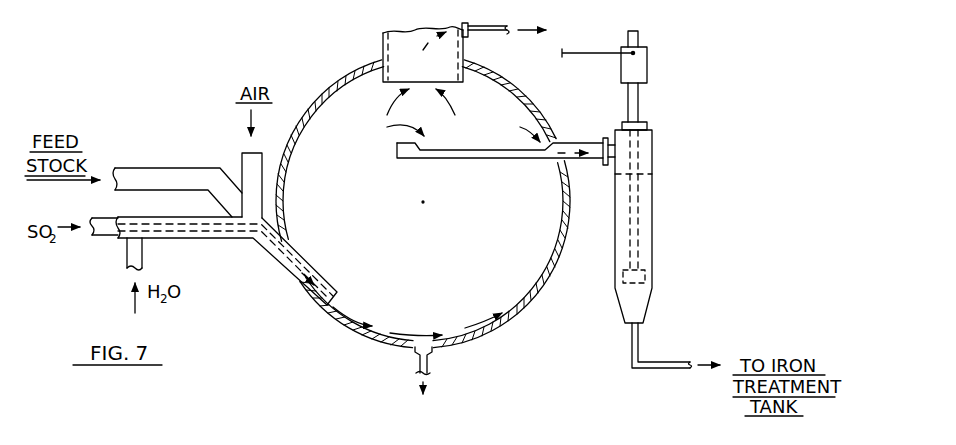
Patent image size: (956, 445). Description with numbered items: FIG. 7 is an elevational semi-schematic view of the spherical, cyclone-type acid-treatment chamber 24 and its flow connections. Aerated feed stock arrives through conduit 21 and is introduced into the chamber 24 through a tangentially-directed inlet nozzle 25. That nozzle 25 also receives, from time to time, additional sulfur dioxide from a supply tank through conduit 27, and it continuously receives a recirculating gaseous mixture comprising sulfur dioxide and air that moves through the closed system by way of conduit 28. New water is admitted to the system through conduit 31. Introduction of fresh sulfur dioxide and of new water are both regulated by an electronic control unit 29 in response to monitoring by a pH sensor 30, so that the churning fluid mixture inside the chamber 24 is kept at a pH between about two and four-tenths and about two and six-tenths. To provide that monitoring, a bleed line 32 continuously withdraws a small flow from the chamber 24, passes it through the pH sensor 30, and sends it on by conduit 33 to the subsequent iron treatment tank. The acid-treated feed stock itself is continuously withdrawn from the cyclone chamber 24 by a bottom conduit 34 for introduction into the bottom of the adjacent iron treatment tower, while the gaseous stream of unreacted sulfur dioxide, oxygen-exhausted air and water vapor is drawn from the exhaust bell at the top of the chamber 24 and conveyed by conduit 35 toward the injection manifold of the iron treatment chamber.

The conduit 21 is at (172, 177).
The acid-treatment chamber 24 is at (542, 290).
The tangentially-directed inlet nozzle 25 is at (296, 272).
The conduit 27 is at (108, 224).
The conduit 28 is at (242, 160).
The electronic control unit 29 is at (637, 67).
The pH sensor 30 is at (645, 228).
The conduit 31 is at (142, 250).
The bleed line 32 is at (578, 148).
The conduit 33 is at (633, 340).
The bottom conduit 34 is at (427, 362).
The conduit 35 is at (487, 33).